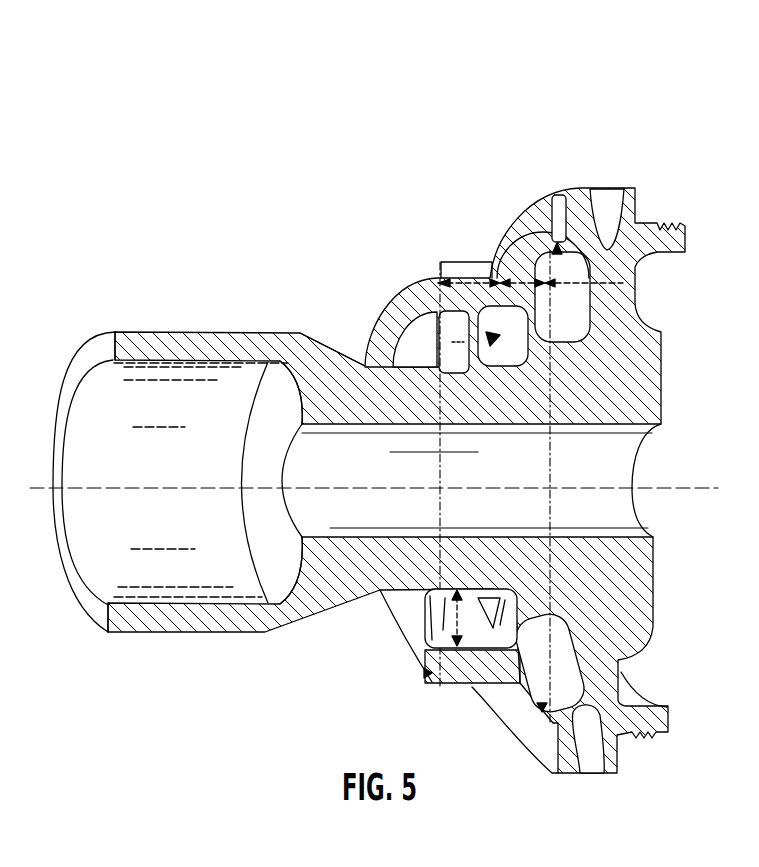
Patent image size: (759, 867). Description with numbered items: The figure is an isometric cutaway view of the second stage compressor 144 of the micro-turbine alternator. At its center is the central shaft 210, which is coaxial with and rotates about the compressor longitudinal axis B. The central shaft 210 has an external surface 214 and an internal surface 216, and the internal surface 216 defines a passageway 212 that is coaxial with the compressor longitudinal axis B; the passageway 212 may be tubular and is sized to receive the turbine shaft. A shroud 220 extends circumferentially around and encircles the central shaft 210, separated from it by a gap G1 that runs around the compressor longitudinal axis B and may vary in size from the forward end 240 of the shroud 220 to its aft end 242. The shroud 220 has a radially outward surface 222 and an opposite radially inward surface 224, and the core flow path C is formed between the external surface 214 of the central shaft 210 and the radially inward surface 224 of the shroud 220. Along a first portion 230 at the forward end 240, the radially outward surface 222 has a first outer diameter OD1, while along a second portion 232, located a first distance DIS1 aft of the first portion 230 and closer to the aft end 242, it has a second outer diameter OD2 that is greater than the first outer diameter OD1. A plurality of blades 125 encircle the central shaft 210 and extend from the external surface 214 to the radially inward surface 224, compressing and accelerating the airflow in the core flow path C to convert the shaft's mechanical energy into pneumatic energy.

The second stage compressor 144 is at (132, 108).
The central shaft 210 is at (347, 385).
The passageway 212 is at (338, 548).
The external surface 214 is at (400, 377).
The internal surface 216 is at (393, 515).
The shroud 220 is at (455, 312).
The radially outward surface 222 is at (490, 276).
The radially inward surface 224 is at (590, 326).
The first portion 230 is at (466, 262).
The second portion 232 is at (557, 243).
The forward end 240 is at (423, 294).
The aft end 242 is at (582, 190).
The blades 125 is at (527, 357).
The core flow path C is at (502, 365).
The first distance DIS1 is at (623, 284).
The first outer diameter OD1 is at (440, 472).
The second outer diameter OD2 is at (552, 468).
The compressor longitudinal axis B is at (685, 490).
The gap G1 is at (481, 682).